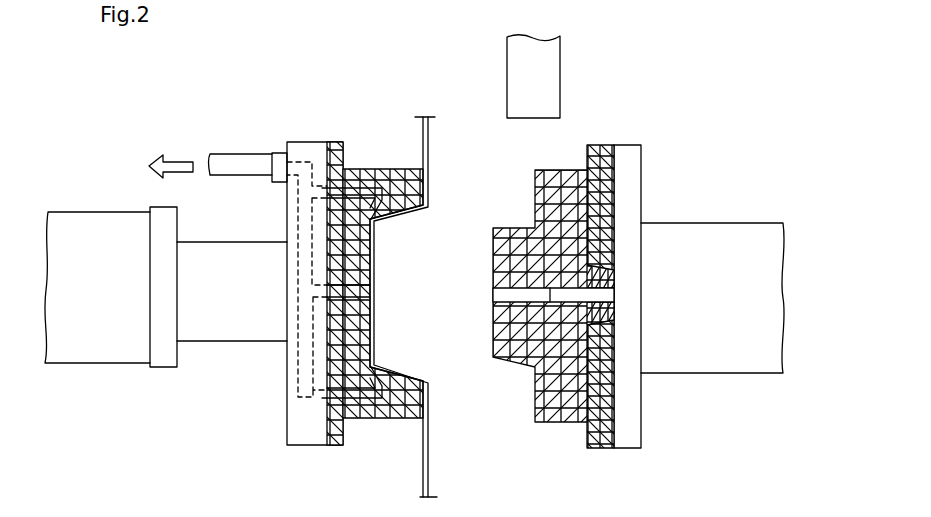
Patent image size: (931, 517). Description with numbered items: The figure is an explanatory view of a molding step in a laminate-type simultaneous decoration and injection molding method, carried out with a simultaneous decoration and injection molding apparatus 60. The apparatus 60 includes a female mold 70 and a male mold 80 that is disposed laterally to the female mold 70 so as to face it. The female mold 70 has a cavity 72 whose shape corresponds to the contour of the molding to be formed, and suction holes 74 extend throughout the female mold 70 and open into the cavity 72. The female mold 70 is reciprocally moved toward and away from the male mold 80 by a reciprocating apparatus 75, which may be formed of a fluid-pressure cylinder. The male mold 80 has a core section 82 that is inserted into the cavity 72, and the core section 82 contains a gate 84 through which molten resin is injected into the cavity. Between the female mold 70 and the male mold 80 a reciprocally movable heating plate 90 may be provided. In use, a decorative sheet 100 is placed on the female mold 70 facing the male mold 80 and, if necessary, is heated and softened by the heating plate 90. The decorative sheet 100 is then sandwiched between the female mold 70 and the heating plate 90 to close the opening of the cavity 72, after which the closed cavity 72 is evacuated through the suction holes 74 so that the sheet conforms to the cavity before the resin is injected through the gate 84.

The simultaneous decoration and injection molding apparatus 60 is at (613, 285).
The female mold 70 is at (393, 412).
The cavity 72 is at (405, 250).
The suction hole 74 is at (362, 190).
The reciprocating apparatus 75 is at (107, 374).
The male mold 80 is at (562, 412).
The core section 82 is at (507, 362).
The gate 84 is at (505, 295).
The heating plate 90 is at (517, 62).
The decorative sheet 100 is at (312, 358).